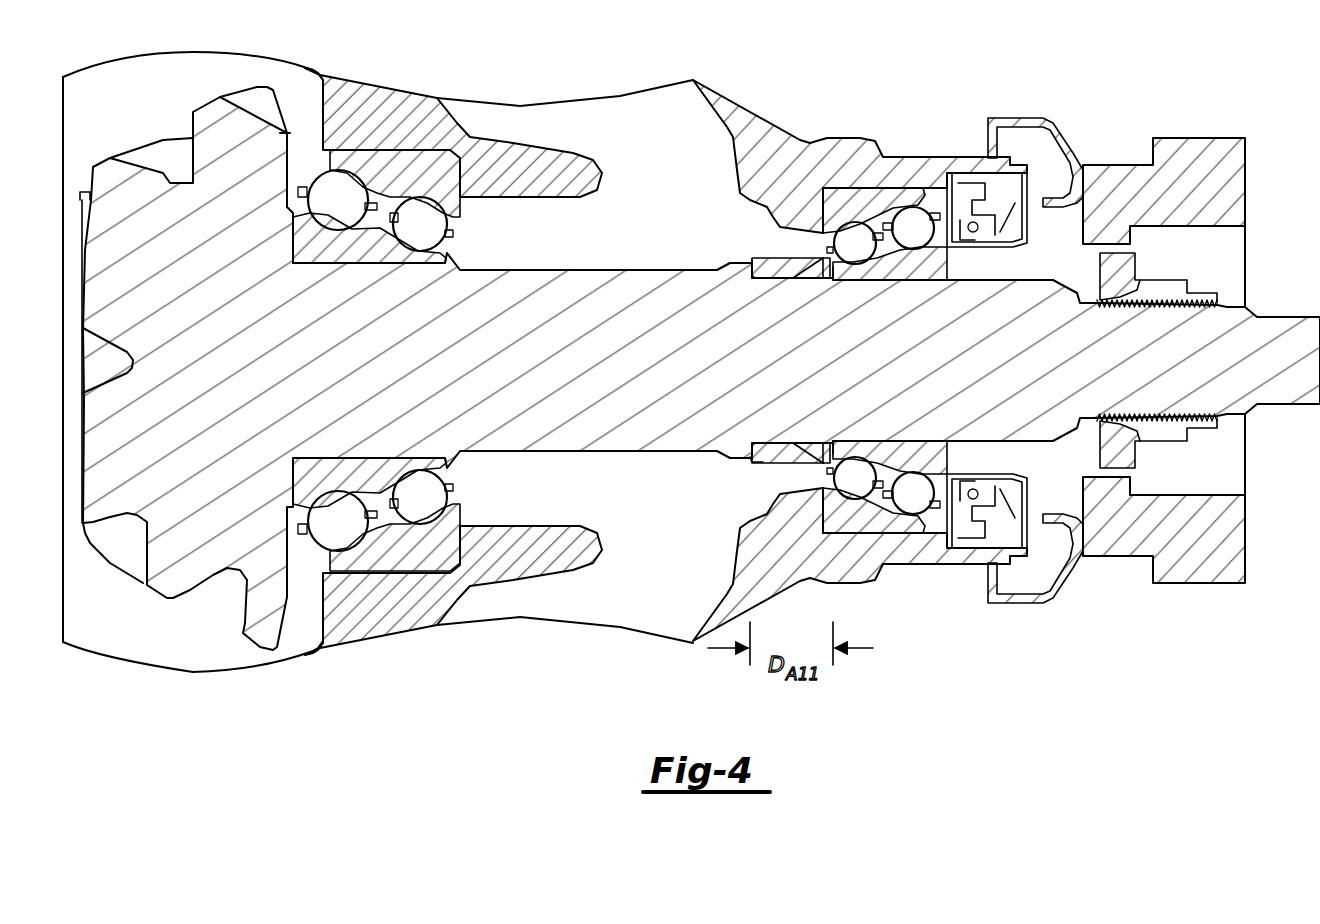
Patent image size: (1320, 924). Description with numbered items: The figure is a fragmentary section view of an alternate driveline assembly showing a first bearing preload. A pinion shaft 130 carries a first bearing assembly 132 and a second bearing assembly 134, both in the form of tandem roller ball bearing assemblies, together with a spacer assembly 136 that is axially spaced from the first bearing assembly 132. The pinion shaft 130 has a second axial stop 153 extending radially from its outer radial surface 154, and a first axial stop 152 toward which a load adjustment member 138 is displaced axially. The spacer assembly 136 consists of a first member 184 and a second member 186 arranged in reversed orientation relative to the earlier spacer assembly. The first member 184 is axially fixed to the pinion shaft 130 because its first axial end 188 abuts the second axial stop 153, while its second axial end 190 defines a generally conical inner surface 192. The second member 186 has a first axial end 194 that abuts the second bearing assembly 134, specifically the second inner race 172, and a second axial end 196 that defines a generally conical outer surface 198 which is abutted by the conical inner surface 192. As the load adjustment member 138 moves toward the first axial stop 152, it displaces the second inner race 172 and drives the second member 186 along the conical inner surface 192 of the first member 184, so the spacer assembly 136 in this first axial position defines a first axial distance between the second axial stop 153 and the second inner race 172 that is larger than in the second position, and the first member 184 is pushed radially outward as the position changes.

The pinion shaft 130 is at (166, 73).
The first bearing assembly 132 is at (381, 123).
The second bearing assembly 134 is at (885, 193).
The spacer assembly 136 is at (768, 297).
The load adjustment member 138 is at (1167, 273).
The first axial stop 152 is at (298, 248).
The second axial stop 153 is at (763, 463).
The outer radial surface 154 is at (1053, 280).
The second inner race 172 is at (910, 453).
The first member 184 is at (746, 282).
The second member 186 is at (817, 280).
The first axial end 188 is at (745, 273).
The second axial end 190 is at (823, 262).
The conical inner surface 192 is at (860, 279).
The first axial end 194 is at (847, 440).
The second axial end 196 is at (792, 467).
The conical outer surface 198 is at (807, 463).